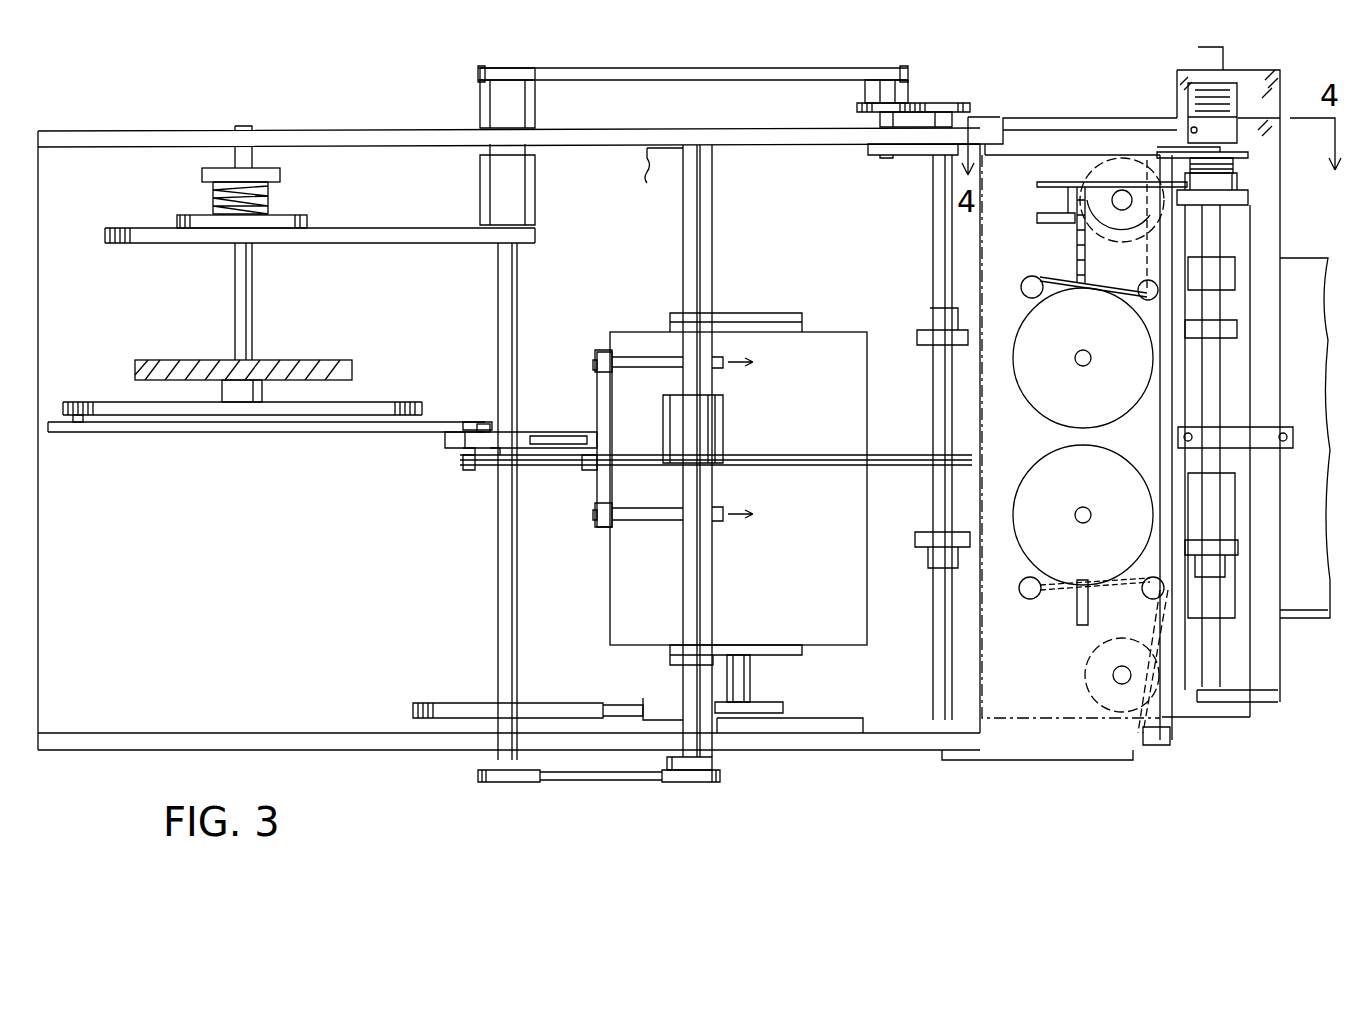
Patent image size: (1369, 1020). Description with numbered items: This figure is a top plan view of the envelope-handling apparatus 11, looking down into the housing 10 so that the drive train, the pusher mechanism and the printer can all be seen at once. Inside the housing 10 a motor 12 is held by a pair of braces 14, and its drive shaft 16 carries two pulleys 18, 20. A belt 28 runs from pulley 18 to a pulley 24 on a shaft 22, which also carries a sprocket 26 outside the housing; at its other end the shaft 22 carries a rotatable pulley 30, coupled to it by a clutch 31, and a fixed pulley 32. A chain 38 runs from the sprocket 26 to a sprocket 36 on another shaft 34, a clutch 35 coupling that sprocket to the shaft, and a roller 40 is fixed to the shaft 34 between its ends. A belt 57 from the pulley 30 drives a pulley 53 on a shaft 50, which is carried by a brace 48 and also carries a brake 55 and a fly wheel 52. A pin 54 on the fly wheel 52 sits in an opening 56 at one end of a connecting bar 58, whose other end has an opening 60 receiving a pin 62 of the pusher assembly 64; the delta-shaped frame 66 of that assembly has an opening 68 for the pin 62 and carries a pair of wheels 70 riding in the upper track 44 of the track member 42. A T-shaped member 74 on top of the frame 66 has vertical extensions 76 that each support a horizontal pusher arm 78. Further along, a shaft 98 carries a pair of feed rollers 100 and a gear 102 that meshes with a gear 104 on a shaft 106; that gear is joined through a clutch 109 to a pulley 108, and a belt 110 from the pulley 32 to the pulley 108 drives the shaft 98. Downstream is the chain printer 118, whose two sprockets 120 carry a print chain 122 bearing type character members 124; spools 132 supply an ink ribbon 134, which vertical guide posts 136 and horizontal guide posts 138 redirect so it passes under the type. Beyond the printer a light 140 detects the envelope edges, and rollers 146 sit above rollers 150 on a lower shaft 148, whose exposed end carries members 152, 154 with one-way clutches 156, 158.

The housing 10 is at (318, 130).
The apparatus 11 is at (422, 80).
The motor 12 is at (610, 586).
The braces 14 is at (802, 654).
The drive shaft 16 is at (750, 684).
The pulley 18 is at (784, 708).
The pulley 20 is at (760, 735).
The shaft 22 is at (498, 592).
The pulley 24 is at (425, 704).
The sprocket 26 is at (488, 783).
The belt 28 is at (643, 698).
The pulley 30 is at (522, 246).
The clutch 31 is at (535, 226).
The pulley 32 is at (524, 68).
The shaft 34 is at (683, 690).
The clutch 35 is at (714, 762).
The sprocket 36 is at (690, 783).
The chain 38 is at (592, 782).
The roller 40 is at (663, 404).
The track member 42 is at (878, 455).
The upper track 44 is at (975, 458).
The brace 48 is at (338, 362).
The shaft 50 is at (253, 300).
The fly wheel 52 is at (398, 402).
The pulley 53 is at (118, 228).
The pin 54 is at (76, 438).
The brake 55 is at (270, 200).
The opening 56 is at (82, 435).
The belt 57 is at (415, 228).
The connecting bar 58 is at (262, 433).
The opening 60 is at (482, 422).
The pin 62 is at (476, 426).
The pusher assembly 64 is at (554, 402).
The frame 66 is at (462, 450).
The opening 68 is at (445, 438).
The wheels 70 is at (585, 468).
The T-shaped member 74 is at (596, 406).
The vertical extensions 76 is at (598, 352).
The pusher arm 78 is at (634, 362).
The shaft 98 is at (933, 216).
The rollers 100 is at (918, 334).
The gear 102 is at (965, 104).
The gear 104 is at (858, 108).
The shaft 106 is at (862, 84).
The pulley 108 is at (872, 68).
The clutch 109 is at (908, 88).
The belt 110 is at (652, 68).
The chain printer 118 is at (1137, 142).
The sprockets 120 is at (1105, 175).
The print chain 122 is at (1075, 252).
The type character members 124 is at (1130, 248).
The spools 132 is at (1038, 452).
The ink ribbon 134 is at (1048, 616).
The vertically extending guide posts 136 is at (1024, 282).
The horizontally extending guide posts 138 is at (1168, 152).
The light 140 is at (1178, 440).
The rollers 146 is at (1240, 548).
The lower shaft 148 is at (1222, 240).
The rollers 150 is at (1194, 620).
The member 152 is at (1238, 182).
The member 154 is at (1248, 155).
The one-way clutch 156 is at (1230, 172).
The one-way clutch 158 is at (1235, 146).